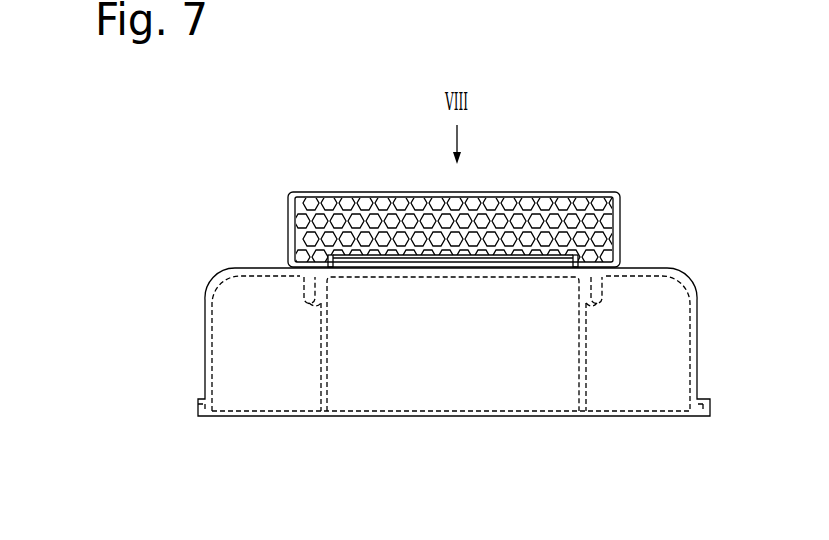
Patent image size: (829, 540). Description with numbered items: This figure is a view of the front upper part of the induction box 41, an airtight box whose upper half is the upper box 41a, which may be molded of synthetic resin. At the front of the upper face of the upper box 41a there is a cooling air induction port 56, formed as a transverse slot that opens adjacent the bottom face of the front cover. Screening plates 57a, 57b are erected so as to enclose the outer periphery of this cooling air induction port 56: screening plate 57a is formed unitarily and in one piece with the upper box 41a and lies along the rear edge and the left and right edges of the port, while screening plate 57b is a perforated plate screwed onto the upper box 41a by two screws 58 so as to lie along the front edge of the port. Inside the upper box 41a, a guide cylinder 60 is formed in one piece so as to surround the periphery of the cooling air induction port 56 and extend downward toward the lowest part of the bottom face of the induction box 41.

The screening plate 57b is at (288, 226).
The screening plate 57a is at (383, 192).
The cooling air induction port 56 is at (497, 259).
The induction box 41 is at (200, 332).
The upper box 41a is at (450, 343).
The screws 58 is at (303, 298).
The guide cylinder 60 is at (318, 362).